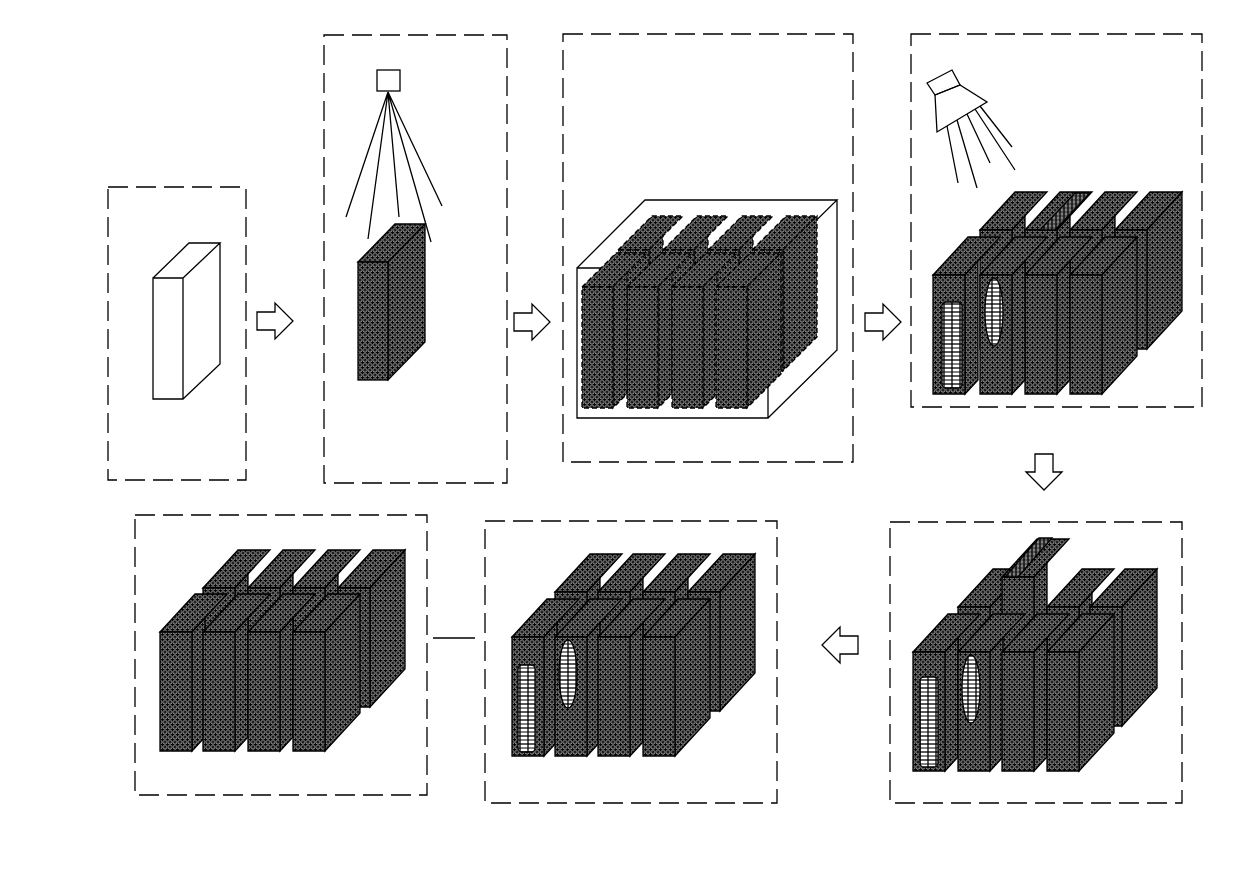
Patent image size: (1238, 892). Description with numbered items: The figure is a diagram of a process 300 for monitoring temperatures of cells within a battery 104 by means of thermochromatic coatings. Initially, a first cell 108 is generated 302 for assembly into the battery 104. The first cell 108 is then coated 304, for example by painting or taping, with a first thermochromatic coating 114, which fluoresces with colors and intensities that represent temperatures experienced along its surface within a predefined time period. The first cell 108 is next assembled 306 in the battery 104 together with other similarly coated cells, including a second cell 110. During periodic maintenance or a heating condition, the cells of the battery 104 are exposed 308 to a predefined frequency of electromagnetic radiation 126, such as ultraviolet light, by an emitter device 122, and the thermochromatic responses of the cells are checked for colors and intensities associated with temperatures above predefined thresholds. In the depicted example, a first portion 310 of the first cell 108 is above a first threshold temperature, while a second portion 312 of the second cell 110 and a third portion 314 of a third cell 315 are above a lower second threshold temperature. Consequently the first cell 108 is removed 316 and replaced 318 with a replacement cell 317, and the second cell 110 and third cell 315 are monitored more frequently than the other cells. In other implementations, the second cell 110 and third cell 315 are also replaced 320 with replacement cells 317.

The process 300 is at (212, 120).
The generating step 302 is at (148, 187).
The coating step 304 is at (323, 170).
The assembling step 306 is at (853, 385).
The exposing step 308 is at (1160, 409).
The removing step 316 is at (993, 803).
The replacing step 318 is at (777, 742).
The replacing step 320 is at (298, 795).
The battery 104 is at (768, 418).
The first cell 108 is at (183, 400).
The second cell 110 is at (600, 280).
The first thermochromatic coating 114 is at (436, 181).
The emitter device 122 is at (970, 90).
The electromagnetic radiation 126 is at (995, 127).
The first portion 310 is at (1073, 193).
The second portion 312 is at (950, 374).
The third portion 314 is at (994, 341).
The third cell 315 is at (1001, 382).
The replacement cell 317 is at (640, 553).